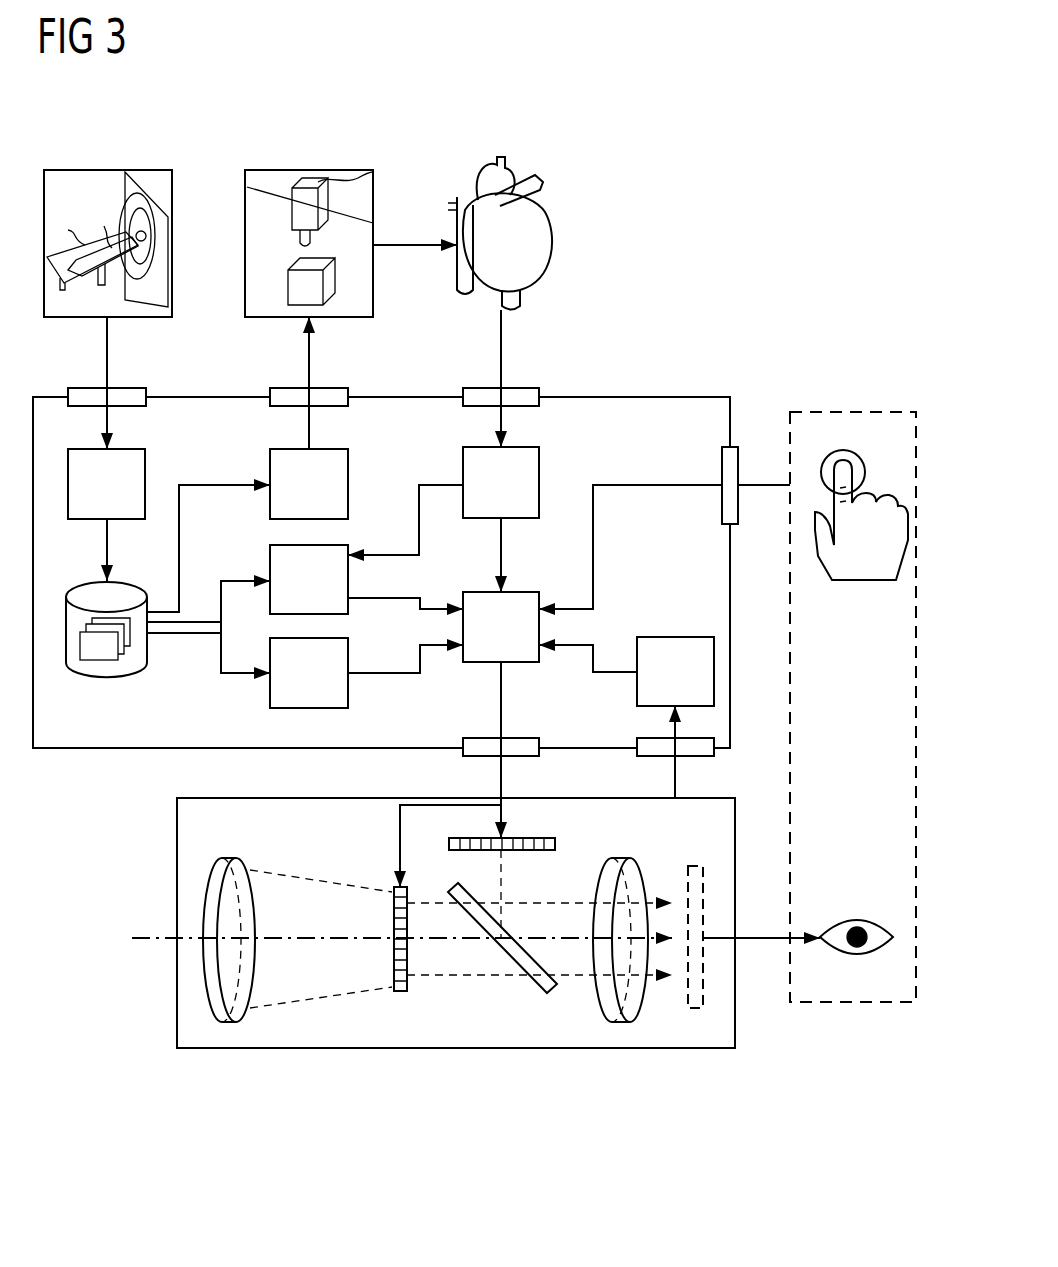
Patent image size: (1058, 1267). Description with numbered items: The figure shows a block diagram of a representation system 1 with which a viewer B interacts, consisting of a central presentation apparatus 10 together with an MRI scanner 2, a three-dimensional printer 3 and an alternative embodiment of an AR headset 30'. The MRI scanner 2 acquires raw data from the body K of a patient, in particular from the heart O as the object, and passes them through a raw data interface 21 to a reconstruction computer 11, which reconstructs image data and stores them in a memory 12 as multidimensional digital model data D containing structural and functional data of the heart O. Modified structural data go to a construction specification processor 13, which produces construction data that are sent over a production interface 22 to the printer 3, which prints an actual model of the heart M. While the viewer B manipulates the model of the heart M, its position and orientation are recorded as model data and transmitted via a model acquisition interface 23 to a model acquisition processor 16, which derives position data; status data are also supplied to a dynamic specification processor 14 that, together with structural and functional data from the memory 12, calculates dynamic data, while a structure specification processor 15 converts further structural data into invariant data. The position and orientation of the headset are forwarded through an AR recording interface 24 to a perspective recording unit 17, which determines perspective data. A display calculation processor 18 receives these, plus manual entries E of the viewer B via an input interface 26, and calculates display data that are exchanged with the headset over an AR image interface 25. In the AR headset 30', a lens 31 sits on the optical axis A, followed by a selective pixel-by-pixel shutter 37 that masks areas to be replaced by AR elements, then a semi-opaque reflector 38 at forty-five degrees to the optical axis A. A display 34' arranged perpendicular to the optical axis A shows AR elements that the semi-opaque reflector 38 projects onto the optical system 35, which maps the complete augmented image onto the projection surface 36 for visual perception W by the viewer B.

The representation system 1 is at (672, 272).
The MRI scanner 2 is at (107, 170).
The 3D printer 3 is at (310, 170).
The presentation apparatus 10 is at (90, 749).
The reconstruction computer 11 is at (146, 465).
The memory 12 is at (115, 665).
The construction specification processor 13 is at (352, 478).
The dynamic specification processor 14 is at (349, 584).
The structure specification processor 15 is at (310, 710).
The model acquisition processor 16 is at (540, 475).
The perspective recording unit 17 is at (676, 637).
The display calculation processor 18 is at (478, 592).
The raw data interface 21 is at (88, 388).
The production interface 22 is at (290, 388).
The model acquisition interface 23 is at (480, 388).
The AR recording interface 24 is at (716, 748).
The AR image interface 25 is at (541, 752).
The input interface 26 is at (722, 520).
The AR headset 30' is at (456, 959).
The lens 31 is at (232, 1022).
The display 34' is at (539, 831).
The optical system 35 is at (625, 1022).
The projection surface 36 is at (694, 1010).
The shutter 37 is at (400, 991).
The semi-opaque reflector 38 is at (548, 995).
The body K is at (72, 218).
The heart O is at (102, 219).
The model of the heart M is at (481, 163).
The multidimensional digital model data D is at (100, 645).
The optical axis A is at (142, 938).
The viewer B is at (858, 412).
The manual entries E is at (866, 582).
The visual perception W is at (857, 917).